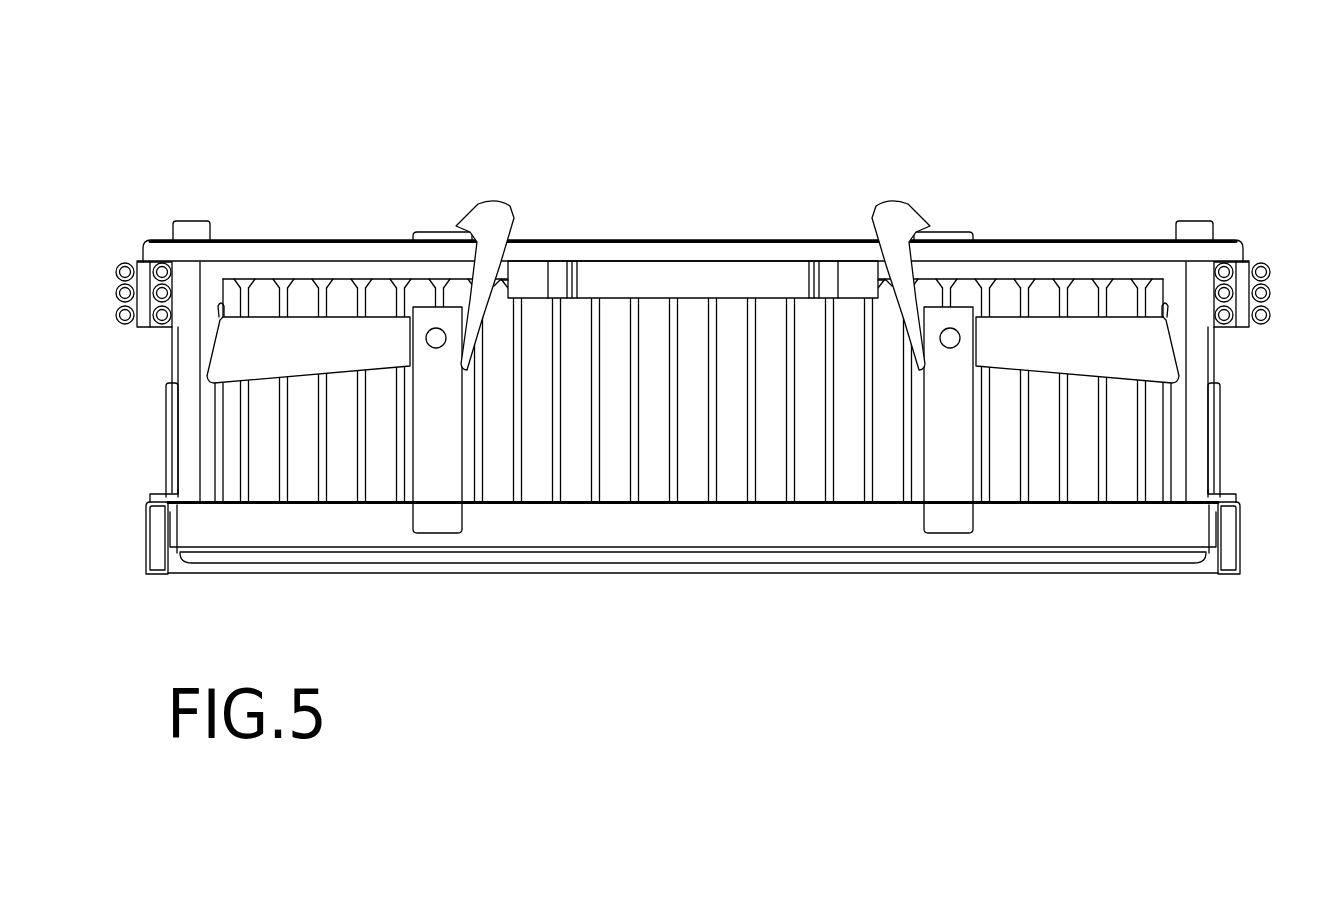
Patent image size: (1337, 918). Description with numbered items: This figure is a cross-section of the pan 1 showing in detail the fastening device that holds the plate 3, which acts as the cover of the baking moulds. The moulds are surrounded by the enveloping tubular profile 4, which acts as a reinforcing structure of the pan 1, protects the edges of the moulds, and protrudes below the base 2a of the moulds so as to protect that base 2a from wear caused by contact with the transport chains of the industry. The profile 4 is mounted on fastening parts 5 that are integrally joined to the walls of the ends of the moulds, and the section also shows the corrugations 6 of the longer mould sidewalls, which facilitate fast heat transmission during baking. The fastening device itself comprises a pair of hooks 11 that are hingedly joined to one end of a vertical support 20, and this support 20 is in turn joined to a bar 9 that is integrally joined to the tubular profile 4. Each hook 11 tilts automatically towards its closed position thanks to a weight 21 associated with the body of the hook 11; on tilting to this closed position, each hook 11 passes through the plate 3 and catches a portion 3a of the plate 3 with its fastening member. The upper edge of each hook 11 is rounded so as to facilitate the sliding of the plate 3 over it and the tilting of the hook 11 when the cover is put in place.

The pan 1 is at (292, 184).
The base 2a is at (357, 560).
The plate 3 is at (1242, 253).
The portion 3a is at (430, 233).
The enveloping tubular profile 4 is at (145, 537).
The fastening parts 5 is at (165, 415).
The corrugations 6 is at (700, 337).
The bar 9 is at (805, 528).
The hooks 11 is at (493, 223).
The vertical support 20 is at (432, 433).
The weight 21 is at (327, 337).